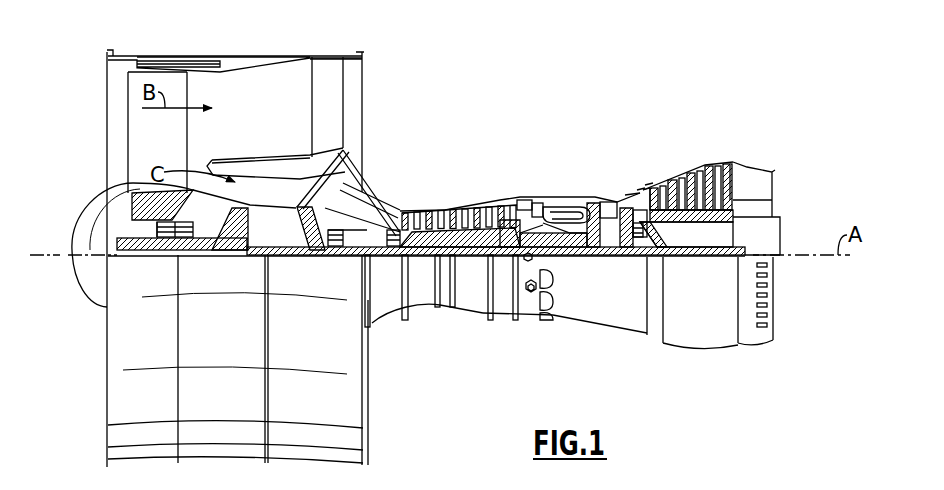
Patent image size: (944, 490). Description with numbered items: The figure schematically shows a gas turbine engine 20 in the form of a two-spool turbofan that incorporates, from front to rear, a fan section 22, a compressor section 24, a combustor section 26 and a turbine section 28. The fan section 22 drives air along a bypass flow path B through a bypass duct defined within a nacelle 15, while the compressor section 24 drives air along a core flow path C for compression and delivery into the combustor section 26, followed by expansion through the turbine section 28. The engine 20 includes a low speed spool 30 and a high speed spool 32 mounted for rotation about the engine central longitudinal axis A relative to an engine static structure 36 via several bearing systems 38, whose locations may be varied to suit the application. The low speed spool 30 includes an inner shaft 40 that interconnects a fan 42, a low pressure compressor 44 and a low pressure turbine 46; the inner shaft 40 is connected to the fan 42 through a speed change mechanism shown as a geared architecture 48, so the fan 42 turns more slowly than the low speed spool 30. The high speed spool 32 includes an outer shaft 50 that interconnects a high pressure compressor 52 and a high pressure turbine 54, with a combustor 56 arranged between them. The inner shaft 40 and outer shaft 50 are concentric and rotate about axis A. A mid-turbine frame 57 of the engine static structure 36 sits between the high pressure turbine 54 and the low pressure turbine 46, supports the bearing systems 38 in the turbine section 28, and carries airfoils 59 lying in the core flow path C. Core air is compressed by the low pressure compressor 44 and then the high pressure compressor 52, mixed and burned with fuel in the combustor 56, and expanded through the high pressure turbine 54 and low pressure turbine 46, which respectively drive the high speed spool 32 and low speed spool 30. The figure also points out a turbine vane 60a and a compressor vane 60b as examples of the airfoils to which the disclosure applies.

The gas turbine engine 20 is at (562, 90).
The fan section 22 is at (186, 50).
The nacelle 15 is at (231, 55).
The fan 42 is at (173, 148).
The low pressure compressor 44 is at (325, 162).
The compressor section 24 is at (398, 182).
The high pressure compressor 52 is at (418, 212).
The compressor vane 60b is at (508, 207).
The high speed spool 32 is at (509, 207).
The combustor section 26 is at (553, 180).
The combustor 56 is at (556, 206).
The turbine vane 60a is at (653, 190).
The mid-turbine frame 57 is at (637, 190).
The high pressure turbine 54 is at (640, 172).
The turbine section 28 is at (662, 153).
The low pressure turbine 46 is at (695, 172).
The airfoils 59 is at (657, 228).
The outer shaft 50 is at (558, 255).
The bearing systems 38 is at (334, 250).
The geared architecture 48 is at (240, 250).
The inner shaft 40 is at (372, 262).
The low speed spool 30 is at (473, 262).
The engine static structure 36 is at (502, 320).